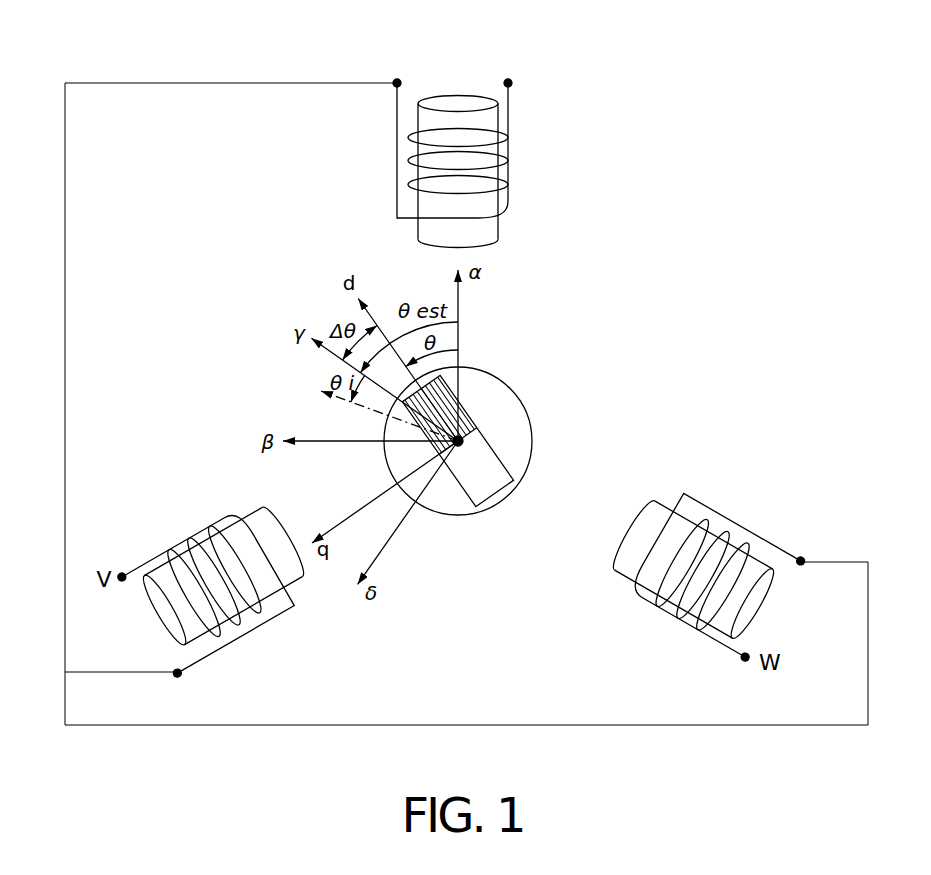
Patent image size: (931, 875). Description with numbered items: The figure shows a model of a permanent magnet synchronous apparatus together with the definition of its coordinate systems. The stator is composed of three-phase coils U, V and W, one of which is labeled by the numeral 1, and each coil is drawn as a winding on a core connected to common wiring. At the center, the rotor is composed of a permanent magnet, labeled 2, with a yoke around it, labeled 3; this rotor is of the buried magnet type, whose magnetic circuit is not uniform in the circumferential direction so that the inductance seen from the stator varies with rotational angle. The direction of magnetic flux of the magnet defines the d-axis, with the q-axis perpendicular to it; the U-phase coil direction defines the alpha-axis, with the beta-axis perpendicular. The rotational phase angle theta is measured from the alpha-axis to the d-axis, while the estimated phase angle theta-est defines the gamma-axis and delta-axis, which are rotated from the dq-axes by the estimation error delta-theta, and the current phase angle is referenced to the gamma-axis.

The armature winding 1 is at (505, 204).
The permanent magnet 2 is at (480, 438).
The rotor 3 is at (450, 515).